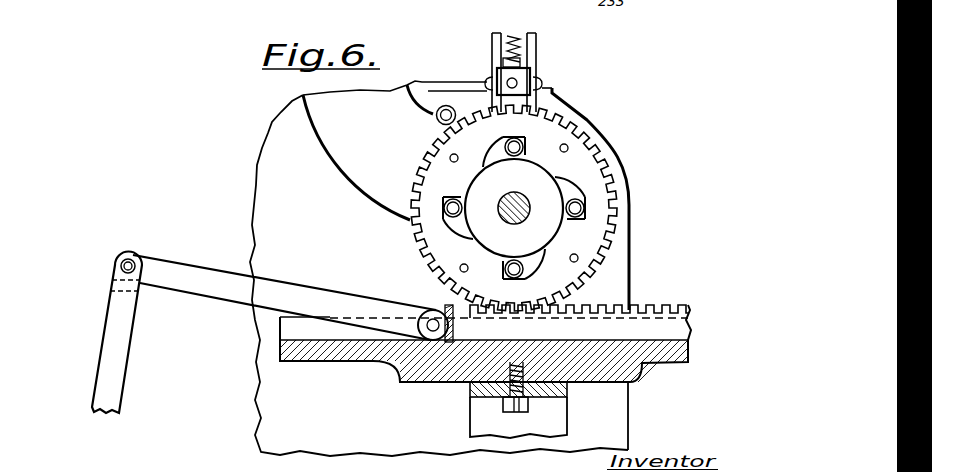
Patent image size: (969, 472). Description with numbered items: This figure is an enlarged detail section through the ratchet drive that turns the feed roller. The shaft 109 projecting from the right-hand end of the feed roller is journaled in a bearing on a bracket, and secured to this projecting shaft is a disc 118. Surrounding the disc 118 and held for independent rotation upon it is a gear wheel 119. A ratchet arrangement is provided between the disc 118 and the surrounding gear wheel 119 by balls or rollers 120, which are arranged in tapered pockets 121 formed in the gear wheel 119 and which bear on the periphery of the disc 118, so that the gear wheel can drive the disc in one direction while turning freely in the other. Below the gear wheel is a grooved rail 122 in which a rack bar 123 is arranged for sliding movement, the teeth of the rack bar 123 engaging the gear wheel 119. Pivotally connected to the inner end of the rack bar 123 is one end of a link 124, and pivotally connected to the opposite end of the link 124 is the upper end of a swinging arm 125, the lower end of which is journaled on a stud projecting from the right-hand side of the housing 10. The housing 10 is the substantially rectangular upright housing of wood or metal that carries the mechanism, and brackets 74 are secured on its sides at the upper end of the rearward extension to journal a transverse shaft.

The housing 10 is at (249, 419).
The brackets 74 is at (378, 195).
The shaft 109 is at (527, 217).
The disc 118 is at (525, 182).
The gear wheel 119 is at (440, 180).
The balls or rollers 120 is at (447, 213).
The tapered pockets 121 is at (573, 190).
The grooved rail 122 is at (402, 365).
The rack bar 123 is at (645, 320).
The link 124 is at (175, 277).
The swinging arm 125 is at (105, 364).